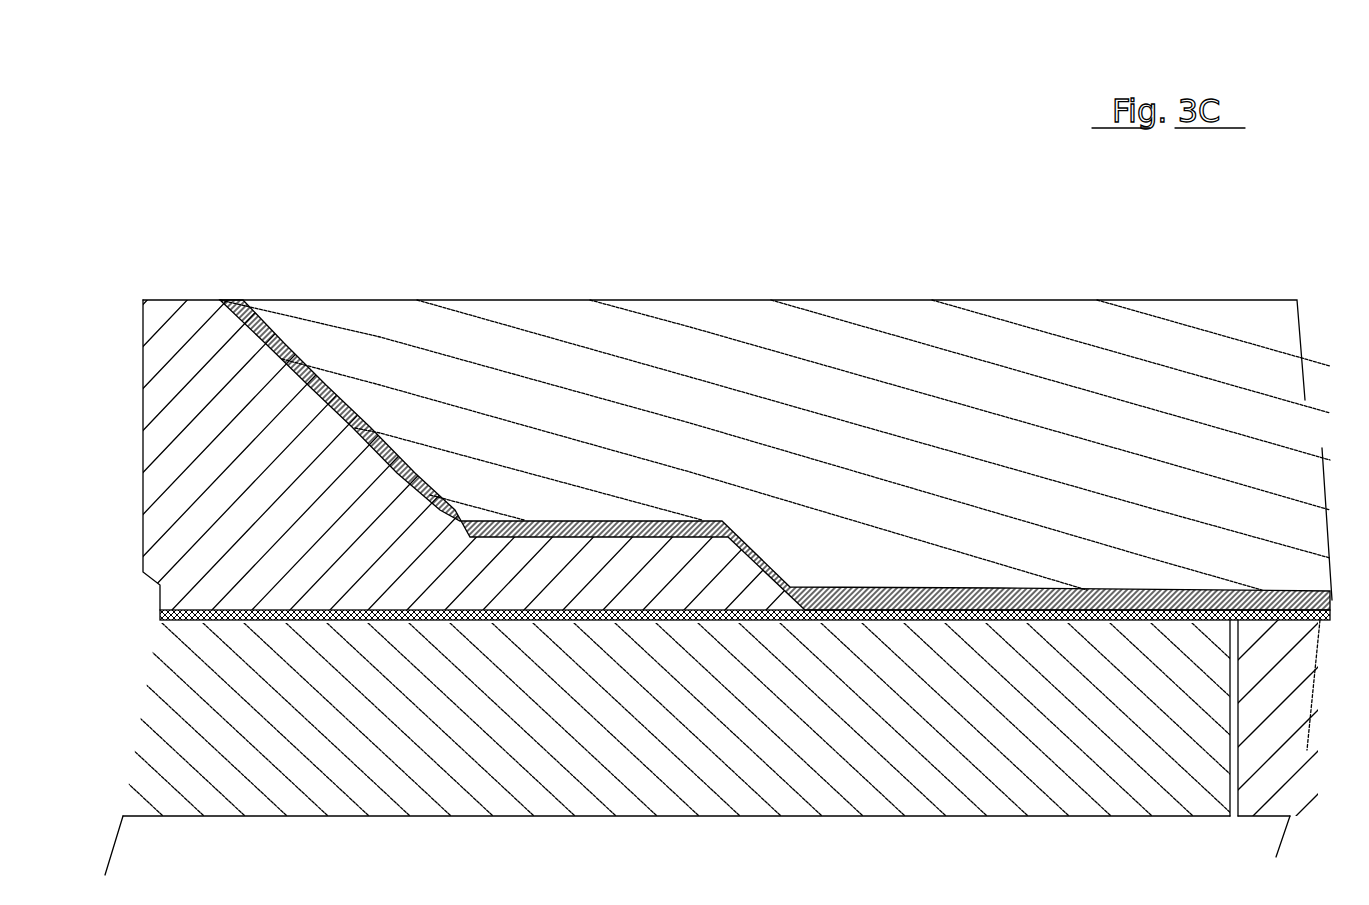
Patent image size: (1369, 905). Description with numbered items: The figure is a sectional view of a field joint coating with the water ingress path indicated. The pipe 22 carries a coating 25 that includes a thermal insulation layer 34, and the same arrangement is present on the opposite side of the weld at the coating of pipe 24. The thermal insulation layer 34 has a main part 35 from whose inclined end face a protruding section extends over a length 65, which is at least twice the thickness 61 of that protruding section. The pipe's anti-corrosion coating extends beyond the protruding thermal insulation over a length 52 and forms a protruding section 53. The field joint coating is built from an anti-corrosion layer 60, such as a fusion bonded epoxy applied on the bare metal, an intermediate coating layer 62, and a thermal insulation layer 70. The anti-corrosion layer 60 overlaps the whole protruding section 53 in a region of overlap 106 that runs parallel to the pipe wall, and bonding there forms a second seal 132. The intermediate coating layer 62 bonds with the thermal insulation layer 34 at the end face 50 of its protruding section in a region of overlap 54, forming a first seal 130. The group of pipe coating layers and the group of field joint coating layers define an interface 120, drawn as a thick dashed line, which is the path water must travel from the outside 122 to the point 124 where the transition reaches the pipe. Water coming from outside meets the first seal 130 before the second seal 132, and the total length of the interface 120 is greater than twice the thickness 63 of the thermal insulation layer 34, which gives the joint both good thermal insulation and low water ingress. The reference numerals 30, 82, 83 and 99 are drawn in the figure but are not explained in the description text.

The pipe 22 is at (332, 761).
The pipe 24 is at (1290, 683).
The coating 25 is at (158, 253).
The boundary 30 is at (1226, 786).
The thermal insulation layer 34 is at (220, 455).
The main part 35 is at (193, 357).
The end face 50 is at (745, 540).
The length 52 is at (995, 89).
The protruding section 53 is at (826, 625).
The region of overlap 54 is at (511, 455).
The anti-corrosion layer 60 is at (940, 625).
The thickness 61 is at (600, 612).
The intermediate coating layer 62 is at (628, 604).
The thickness 63 is at (122, 606).
The length 65 is at (713, 90).
The thermal insulation layer 70 is at (1045, 398).
The edge thickness 82 is at (116, 558).
The thinned portion 83 is at (566, 590).
The sloped surface 99 is at (292, 372).
The region of overlap 106 is at (892, 573).
The interface 120 is at (347, 420).
The outside 122 is at (222, 300).
The point 124 is at (1000, 625).
The first seal 130 is at (630, 513).
The second seal 132 is at (930, 565).